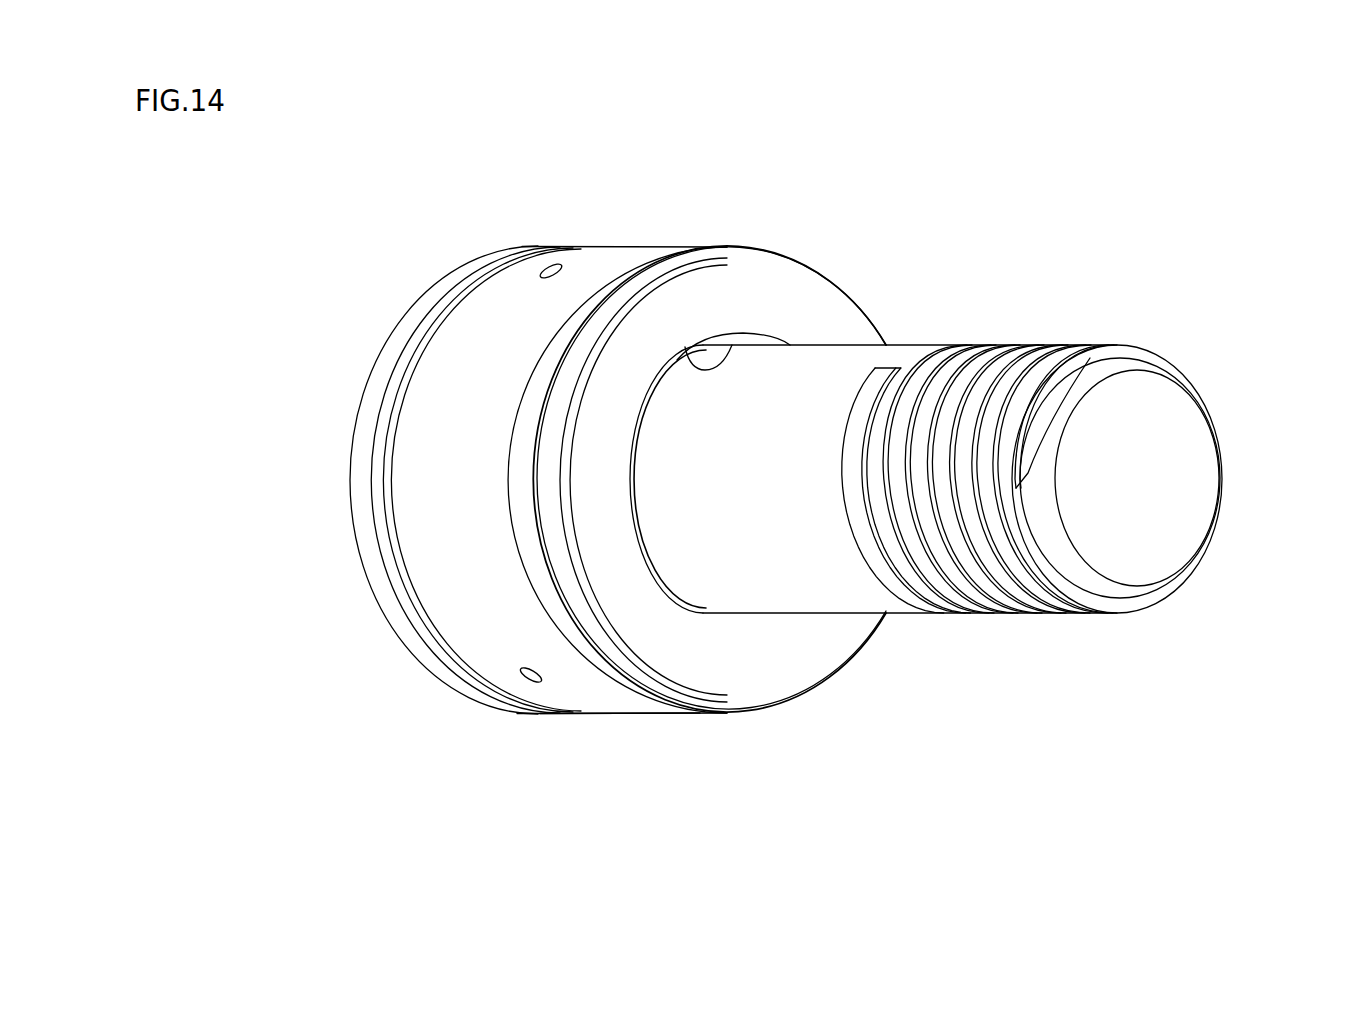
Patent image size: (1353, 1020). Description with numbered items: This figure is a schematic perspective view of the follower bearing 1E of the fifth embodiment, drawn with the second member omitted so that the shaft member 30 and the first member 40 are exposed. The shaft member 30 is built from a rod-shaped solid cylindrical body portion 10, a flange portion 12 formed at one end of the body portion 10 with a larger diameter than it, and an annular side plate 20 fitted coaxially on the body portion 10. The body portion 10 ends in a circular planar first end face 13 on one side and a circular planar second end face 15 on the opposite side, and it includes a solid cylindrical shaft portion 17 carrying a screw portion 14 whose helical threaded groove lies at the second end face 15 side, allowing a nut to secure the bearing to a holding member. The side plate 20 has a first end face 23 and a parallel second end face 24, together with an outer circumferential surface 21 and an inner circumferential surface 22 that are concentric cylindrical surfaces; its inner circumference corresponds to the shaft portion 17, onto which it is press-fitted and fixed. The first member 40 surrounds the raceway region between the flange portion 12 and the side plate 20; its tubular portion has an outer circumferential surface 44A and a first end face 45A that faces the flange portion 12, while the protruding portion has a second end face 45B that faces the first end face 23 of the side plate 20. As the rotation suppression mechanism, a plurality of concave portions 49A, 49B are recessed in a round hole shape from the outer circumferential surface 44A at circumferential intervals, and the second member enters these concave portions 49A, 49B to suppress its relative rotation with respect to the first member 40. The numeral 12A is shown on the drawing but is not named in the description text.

The follower bearing 1E is at (1122, 207).
The body portion 10 is at (852, 353).
The flange portion 12 is at (392, 352).
The flange groove edge 12A is at (415, 317).
The first end face 13 is at (355, 413).
The screw portion 14 is at (1018, 357).
The second end face 15 is at (1165, 471).
The shaft portion 17 is at (855, 342).
The side plate 20 is at (817, 360).
The outer circumferential surface 21 is at (667, 263).
The inner circumferential surface 22 is at (730, 345).
The first end face 23 is at (627, 275).
The second end face 24 is at (763, 283).
The shaft member 30 is at (885, 208).
The first member 40 is at (626, 730).
The outer circumferential surface 44A is at (587, 707).
The first end face 45A is at (493, 690).
The second end face 45B is at (647, 700).
The concave portion 49A is at (549, 264).
The concave portion 49B is at (531, 683).